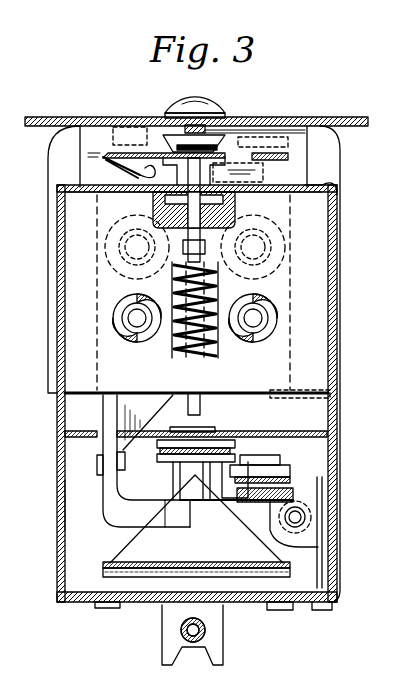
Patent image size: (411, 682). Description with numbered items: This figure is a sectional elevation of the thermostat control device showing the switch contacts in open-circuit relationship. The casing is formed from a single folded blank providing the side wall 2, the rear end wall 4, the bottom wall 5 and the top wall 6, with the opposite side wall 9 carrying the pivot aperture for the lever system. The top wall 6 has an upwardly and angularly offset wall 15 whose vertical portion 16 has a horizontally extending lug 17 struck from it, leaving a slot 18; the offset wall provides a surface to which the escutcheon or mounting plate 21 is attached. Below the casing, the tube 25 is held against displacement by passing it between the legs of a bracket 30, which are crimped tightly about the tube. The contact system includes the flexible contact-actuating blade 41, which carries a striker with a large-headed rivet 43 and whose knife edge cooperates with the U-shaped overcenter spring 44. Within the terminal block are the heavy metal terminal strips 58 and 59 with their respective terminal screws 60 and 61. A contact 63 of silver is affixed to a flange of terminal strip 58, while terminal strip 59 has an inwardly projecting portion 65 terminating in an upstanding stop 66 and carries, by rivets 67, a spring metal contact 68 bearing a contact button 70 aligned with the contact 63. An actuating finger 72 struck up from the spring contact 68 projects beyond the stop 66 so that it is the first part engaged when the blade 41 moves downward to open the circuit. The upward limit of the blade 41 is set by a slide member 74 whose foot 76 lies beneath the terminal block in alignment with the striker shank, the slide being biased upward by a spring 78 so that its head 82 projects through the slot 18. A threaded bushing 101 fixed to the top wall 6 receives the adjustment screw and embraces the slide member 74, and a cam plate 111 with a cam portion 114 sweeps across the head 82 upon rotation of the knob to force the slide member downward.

The side wall 2 is at (57, 298).
The end wall 4 is at (57, 503).
The bottom wall 5 is at (252, 605).
The top wall 6 is at (100, 190).
The opposite side wall 9 is at (333, 305).
The upwardly and angularly offset wall 15 is at (275, 131).
The vertical portion 16 is at (279, 154).
The horizontally extending lug 17 is at (197, 112).
The slot 18 is at (226, 142).
The escutcheon or mounting plate 21 is at (97, 117).
The tube 25 is at (187, 630).
The bracket 30 is at (167, 623).
The flexible contact-actuating blade 41 is at (250, 445).
The large-headed rivet 43 is at (167, 468).
The overcenter spring 44 is at (130, 553).
The terminal strip 58 is at (277, 417).
The terminal strip 59 is at (110, 417).
The terminal screw 60 is at (272, 257).
The terminal screw 61 is at (105, 250).
The contact 63 is at (290, 480).
The inwardly projecting portion 65 is at (165, 498).
The upstanding stop 66 is at (200, 513).
The rivets 67 is at (97, 463).
The spring metal contact 68 is at (305, 546).
The contact button 70 is at (295, 495).
The actuating finger 72 is at (227, 497).
The slide member 74 is at (209, 245).
The foot 76 is at (186, 412).
The spring 78 is at (220, 352).
The head 82 is at (240, 180).
The threaded bushing 101 is at (235, 212).
The cam plate 111 is at (215, 153).
The cam portion 114 is at (115, 172).